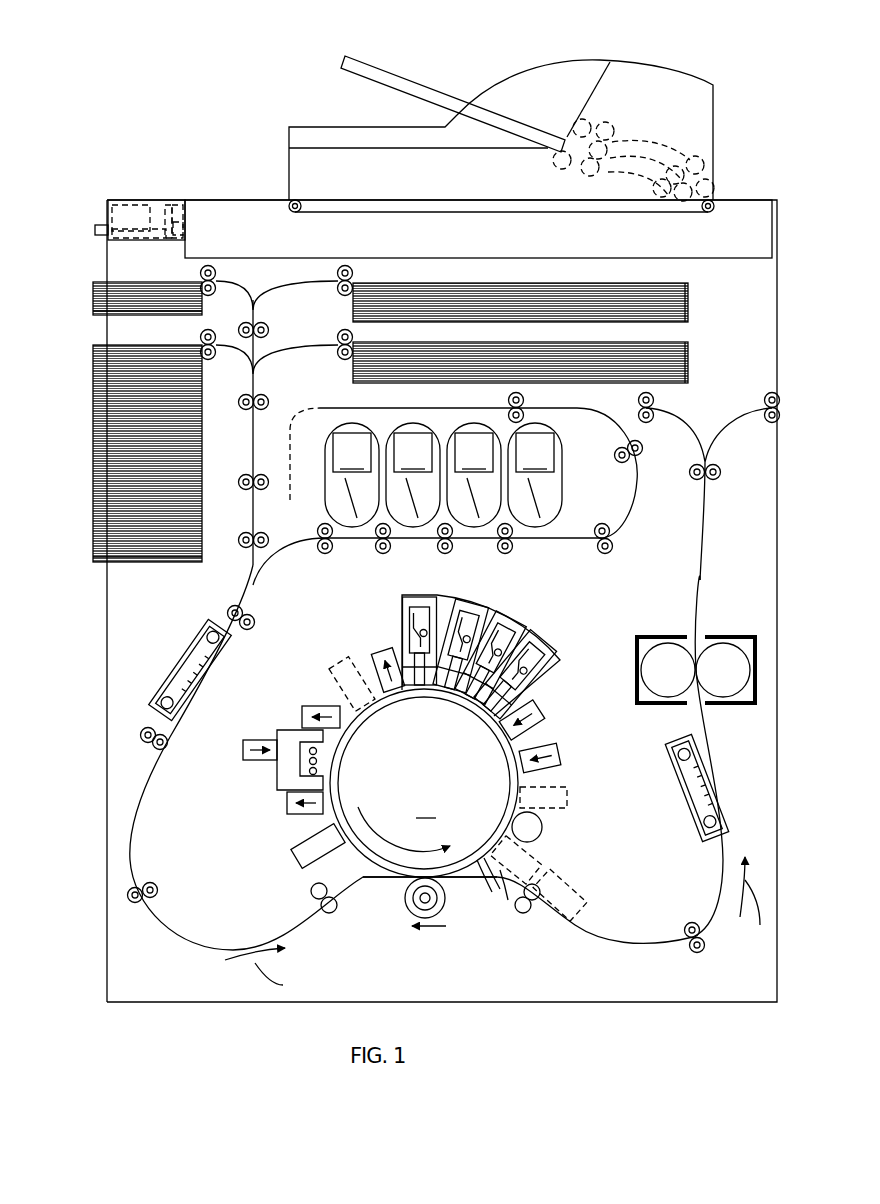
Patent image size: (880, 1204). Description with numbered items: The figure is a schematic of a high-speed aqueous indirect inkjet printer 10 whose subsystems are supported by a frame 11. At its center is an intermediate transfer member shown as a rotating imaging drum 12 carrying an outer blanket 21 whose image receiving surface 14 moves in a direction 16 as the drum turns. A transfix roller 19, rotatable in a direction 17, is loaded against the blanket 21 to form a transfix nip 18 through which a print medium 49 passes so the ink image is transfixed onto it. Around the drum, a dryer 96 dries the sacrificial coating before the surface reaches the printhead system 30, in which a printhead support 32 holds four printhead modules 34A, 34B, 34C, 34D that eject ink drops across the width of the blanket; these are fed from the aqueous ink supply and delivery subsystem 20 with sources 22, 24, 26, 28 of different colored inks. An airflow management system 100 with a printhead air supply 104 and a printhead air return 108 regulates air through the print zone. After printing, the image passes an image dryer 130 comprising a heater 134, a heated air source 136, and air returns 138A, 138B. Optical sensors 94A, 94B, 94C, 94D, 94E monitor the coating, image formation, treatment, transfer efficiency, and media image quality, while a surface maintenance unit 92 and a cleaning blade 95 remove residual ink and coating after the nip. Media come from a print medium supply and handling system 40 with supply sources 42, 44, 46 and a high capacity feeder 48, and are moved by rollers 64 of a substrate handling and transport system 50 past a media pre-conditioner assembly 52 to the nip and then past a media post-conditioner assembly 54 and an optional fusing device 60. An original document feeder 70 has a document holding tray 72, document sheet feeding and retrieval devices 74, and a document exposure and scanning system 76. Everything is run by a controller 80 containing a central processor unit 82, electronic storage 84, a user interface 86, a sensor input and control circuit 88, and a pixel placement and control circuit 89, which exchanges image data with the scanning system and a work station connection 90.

The printer 10 is at (150, 95).
The frame 11 is at (107, 645).
The intermediate rotating member 12 is at (424, 783).
The image receiving surface 14 is at (356, 858).
The direction 16 is at (378, 832).
The direction 17 is at (446, 926).
The transfix nip 18 is at (405, 908).
The transfix roller 19 is at (455, 900).
The aqueous ink supply and delivery subsystem 20 is at (426, 446).
The blanket 21 is at (491, 889).
The source of aqueous ink 22 is at (352, 475).
The source of aqueous ink 24 is at (413, 475).
The source of aqueous ink 26 is at (474, 475).
The source of aqueous ink 28 is at (535, 475).
The printhead system 30 is at (479, 632).
The printhead support 32 is at (512, 632).
The printhead module 34A is at (436, 606).
The printhead module 34B is at (470, 616).
The printhead module 34C is at (512, 633).
The printhead module 34D is at (548, 659).
The print medium supply and handling system 40 is at (121, 450).
The substrate supply source 42 is at (690, 300).
The substrate supply source 44 is at (690, 362).
The substrate supply source 46 is at (95, 316).
The high capacity paper supply 48 is at (150, 563).
The print medium 49 is at (377, 878).
The substrate handling and transport system 50 is at (130, 845).
The media pre-conditioner assembly 52 is at (168, 676).
The media post-conditioner assembly 54 is at (712, 781).
The fusing device 60 is at (667, 637).
The rollers 64 is at (715, 474).
The original document feeder 70 is at (497, 106).
The document holding tray 72 is at (360, 58).
The document sheet feeding and retrieval devices 74 is at (645, 150).
The document exposure and scanning system 76 is at (557, 212).
The controller 80 is at (161, 209).
The central processor unit 82 is at (110, 201).
The electronic storage 84 is at (160, 240).
The user interface 86 is at (168, 205).
The sensor input and control circuit 88 is at (182, 201).
The pixel placement and control circuit 89 is at (190, 229).
The work station connection 90 is at (95, 230).
The surface maintenance unit 92 is at (543, 828).
The optical sensor 94A is at (567, 798).
The optical sensor 94B is at (332, 668).
The optical sensor 94C is at (293, 852).
The optical sensor 94D is at (545, 859).
The optical sensor 94E is at (585, 899).
The cleaning blade 95 is at (508, 900).
The dryer 96 is at (560, 756).
The airflow management system 100 is at (566, 706).
The printhead air supply 104 is at (545, 716).
The printhead air return 108 is at (379, 652).
The image dryer 130 is at (260, 751).
The infrared heater 134 is at (277, 776).
The heated air source 136 is at (243, 751).
The air return 138A is at (303, 710).
The air return 138B is at (287, 805).